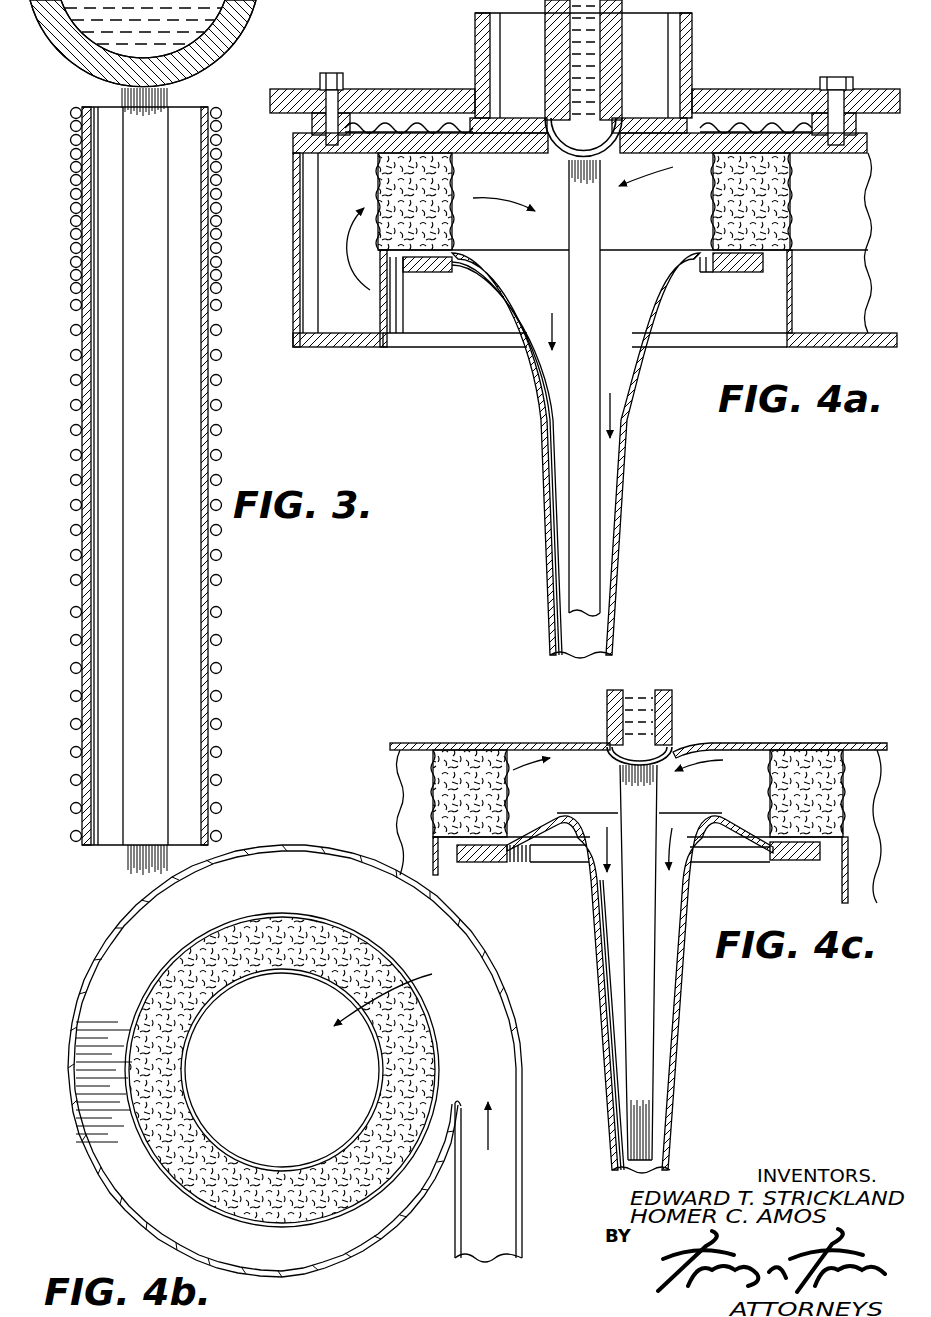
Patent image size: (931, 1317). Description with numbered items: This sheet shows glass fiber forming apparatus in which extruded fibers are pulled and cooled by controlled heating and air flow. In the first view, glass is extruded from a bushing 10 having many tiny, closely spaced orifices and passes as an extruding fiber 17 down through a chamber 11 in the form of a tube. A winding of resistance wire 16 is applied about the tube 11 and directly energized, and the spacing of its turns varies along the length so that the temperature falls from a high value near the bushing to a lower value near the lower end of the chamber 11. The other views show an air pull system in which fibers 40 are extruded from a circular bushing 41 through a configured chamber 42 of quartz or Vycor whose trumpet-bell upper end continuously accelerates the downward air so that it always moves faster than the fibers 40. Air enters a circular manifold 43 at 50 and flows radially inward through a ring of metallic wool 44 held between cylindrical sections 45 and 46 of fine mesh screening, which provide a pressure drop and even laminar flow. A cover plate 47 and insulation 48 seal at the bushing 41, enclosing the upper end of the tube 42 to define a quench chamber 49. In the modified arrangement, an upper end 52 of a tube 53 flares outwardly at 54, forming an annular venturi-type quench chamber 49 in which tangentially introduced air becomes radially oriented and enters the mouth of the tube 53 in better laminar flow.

In FIG. 3, the bushing 10 is at (230, 50).
In FIG. 3, the chamber 11 is at (208, 460).
In FIG. 3, the winding of resistance wire 16 is at (220, 423).
In FIG. 3, the extruding fiber 17 is at (172, 200).
In FIG. 4A, the fibers 40 is at (625, 300).
In FIG. 4A, the circular bushing 41 is at (546, 120).
In FIG. 4C, the circular bushing 41 is at (672, 742).
In FIG. 4A, the configured chamber 42 is at (614, 437).
In FIG. 4A, the circular manifold 43 is at (823, 252).
In FIG. 4B, the circular manifold 43 is at (116, 976).
In FIG. 4A, the ring of metallic wool 44 is at (417, 230).
In FIG. 4B, the ring of metallic wool 44 is at (286, 951).
In FIG. 4C, the ring of metallic wool 44 is at (807, 760).
In FIG. 4A, the cylindrical section of fine mesh screening 45 is at (378, 182).
In FIG. 4B, the cylindrical section of fine mesh screening 45 is at (271, 923).
In FIG. 4A, the cylindrical section of fine mesh screening 46 is at (453, 183).
In FIG. 4B, the cylindrical section of fine mesh screening 46 is at (245, 980).
In FIG. 4A, the cover plate 47 is at (643, 148).
In FIG. 4C, the cover plate 47 is at (747, 743).
In FIG. 4A, the insulation 48 is at (293, 143).
In FIG. 4A, the quench chamber 49 is at (693, 180).
In FIG. 4B, the quench chamber 49 is at (333, 1045).
In FIG. 4C, the quench chamber 49 is at (567, 758).
In FIG. 4B, the air inlet 50 is at (488, 1180).
In FIG. 4C, the upper end of tube 52 is at (718, 813).
In FIG. 4C, the tube 53 is at (681, 990).
In FIG. 4C, the outward flare 54 is at (752, 833).